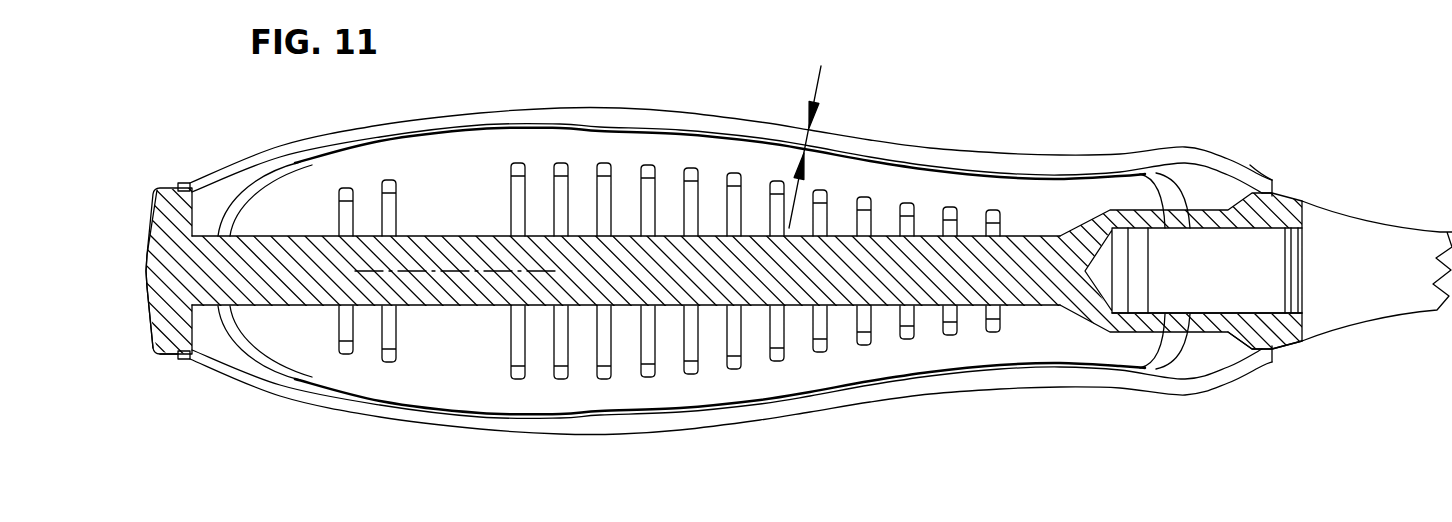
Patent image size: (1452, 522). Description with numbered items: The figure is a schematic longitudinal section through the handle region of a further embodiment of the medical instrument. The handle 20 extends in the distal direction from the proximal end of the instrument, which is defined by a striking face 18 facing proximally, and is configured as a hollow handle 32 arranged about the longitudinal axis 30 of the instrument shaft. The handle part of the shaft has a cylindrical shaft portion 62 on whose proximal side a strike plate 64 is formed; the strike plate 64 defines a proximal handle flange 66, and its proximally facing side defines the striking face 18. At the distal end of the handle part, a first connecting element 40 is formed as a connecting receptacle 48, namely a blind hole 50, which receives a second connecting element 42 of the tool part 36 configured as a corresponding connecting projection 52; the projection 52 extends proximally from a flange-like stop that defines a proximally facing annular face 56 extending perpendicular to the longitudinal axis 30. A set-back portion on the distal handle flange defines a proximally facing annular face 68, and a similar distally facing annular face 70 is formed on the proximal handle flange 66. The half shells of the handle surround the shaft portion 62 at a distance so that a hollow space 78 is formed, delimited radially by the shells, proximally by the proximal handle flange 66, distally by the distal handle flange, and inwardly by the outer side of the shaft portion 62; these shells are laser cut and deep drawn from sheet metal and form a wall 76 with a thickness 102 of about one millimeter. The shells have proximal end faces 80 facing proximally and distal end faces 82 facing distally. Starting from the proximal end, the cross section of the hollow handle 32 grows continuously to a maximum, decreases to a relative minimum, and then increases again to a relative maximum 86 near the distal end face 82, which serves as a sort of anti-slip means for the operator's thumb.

The striking face 18 is at (147, 293).
The handle 20 is at (693, 91).
The longitudinal axis 30 is at (433, 271).
The hollow handle 32 is at (583, 83).
The tool part 36 is at (1379, 193).
The first connecting element 40 is at (1160, 308).
The second connecting element 42 is at (1183, 206).
The connecting receptacle 48 is at (1252, 230).
The blind hole 50 is at (1245, 310).
The connecting projection 52 is at (1160, 206).
The annular face 56 is at (1292, 338).
The cylindrical shaft portion 62 is at (284, 236).
The strike plate 64 is at (158, 223).
The proximal handle flange 66 is at (168, 356).
The annular face 68 is at (1258, 183).
The annular face 70 is at (180, 356).
The wall 76 is at (766, 405).
The hollow space 78 is at (432, 412).
The proximal end faces 80 is at (180, 187).
The distal end faces 82 is at (1272, 183).
The relative maximum 86 is at (1195, 392).
The thickness 102 is at (814, 138).